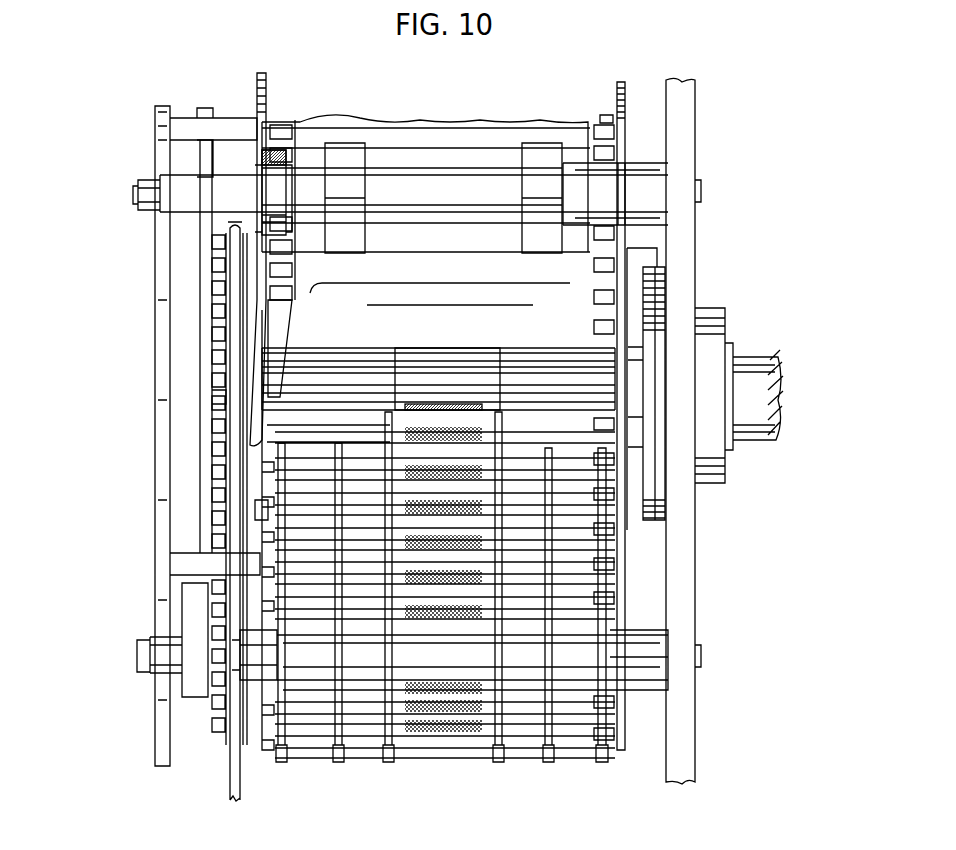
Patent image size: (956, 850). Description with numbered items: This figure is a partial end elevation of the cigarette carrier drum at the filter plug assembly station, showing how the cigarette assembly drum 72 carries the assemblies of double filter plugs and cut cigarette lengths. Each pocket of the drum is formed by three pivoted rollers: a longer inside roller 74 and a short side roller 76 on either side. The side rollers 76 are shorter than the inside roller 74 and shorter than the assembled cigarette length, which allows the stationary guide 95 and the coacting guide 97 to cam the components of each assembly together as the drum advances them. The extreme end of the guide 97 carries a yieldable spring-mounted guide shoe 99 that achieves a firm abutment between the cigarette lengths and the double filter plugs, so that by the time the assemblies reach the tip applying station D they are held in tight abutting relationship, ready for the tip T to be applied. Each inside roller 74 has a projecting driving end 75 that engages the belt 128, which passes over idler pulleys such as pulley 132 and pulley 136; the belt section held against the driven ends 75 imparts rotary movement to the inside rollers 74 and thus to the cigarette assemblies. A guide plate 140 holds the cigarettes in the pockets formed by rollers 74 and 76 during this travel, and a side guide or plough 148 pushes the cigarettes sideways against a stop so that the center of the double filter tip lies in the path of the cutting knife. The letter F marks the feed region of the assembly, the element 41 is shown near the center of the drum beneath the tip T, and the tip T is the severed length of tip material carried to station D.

The abrasive strip 41 is at (437, 397).
The cigarette assembly drum 72 is at (205, 240).
The inside roller 74 is at (218, 328).
The projecting driving end 75 is at (205, 397).
The side roller 76 is at (573, 377).
The stationary guide 95 is at (622, 102).
The guide 97 is at (267, 102).
The guide shoe 99 is at (272, 363).
The belt 128 is at (232, 254).
The idler pulley 132 is at (271, 178).
The idler pulley 136 is at (223, 612).
The guide plate 140 is at (280, 470).
The side guide or plough 148 is at (262, 510).
The feed roller F is at (506, 319).
The tip T is at (432, 387).
The tip applying station D is at (632, 403).